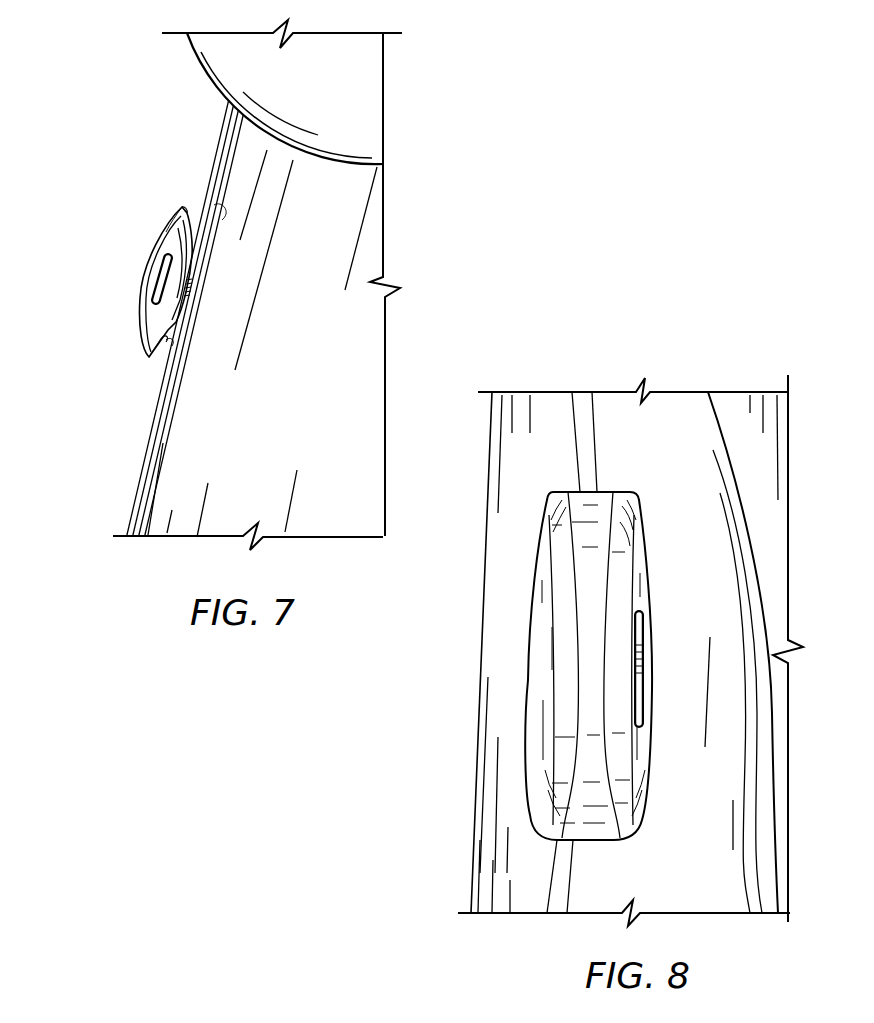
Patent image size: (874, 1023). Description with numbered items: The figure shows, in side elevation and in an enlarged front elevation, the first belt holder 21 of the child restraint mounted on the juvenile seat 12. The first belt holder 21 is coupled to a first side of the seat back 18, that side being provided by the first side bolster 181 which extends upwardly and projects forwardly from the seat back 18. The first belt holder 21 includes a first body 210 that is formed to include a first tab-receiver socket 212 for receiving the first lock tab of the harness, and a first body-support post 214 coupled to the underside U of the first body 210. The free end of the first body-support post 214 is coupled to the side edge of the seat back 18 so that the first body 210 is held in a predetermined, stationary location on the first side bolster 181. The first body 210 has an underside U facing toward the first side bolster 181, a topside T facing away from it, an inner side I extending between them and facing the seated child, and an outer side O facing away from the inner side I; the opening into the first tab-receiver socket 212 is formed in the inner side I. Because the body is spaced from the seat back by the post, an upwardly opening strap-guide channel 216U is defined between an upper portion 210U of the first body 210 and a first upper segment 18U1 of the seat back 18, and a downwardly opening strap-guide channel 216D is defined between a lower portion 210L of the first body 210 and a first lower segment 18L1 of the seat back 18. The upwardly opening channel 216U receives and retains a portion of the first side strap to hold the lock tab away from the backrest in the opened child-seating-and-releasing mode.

In FIG. 7, the juvenile seat 12 is at (399, 90).
In FIG. 8, the juvenile seat 12 is at (704, 416).
In FIG. 7, the seat back 18 is at (318, 336).
In FIG. 8, the seat back 18 is at (771, 462).
In FIG. 7, the first upper segment of seat back 18U1 is at (200, 213).
In FIG. 7, the first lower segment of seat back 18L1 is at (170, 343).
In FIG. 7, the first side bolster 181 is at (132, 444).
In FIG. 8, the first side bolster 181 is at (608, 416).
In FIG. 7, the first belt holder 21 is at (146, 238).
In FIG. 8, the first belt holder 21 is at (564, 666).
In FIG. 7, the first body 210 is at (146, 238).
In FIG. 8, the first body 210 is at (564, 666).
In FIG. 7, the upper portion of body 210U is at (182, 206).
In FIG. 8, the upper portion of body 210U is at (557, 527).
In FIG. 7, the lower portion of body 210L is at (153, 323).
In FIG. 8, the lower portion of body 210L is at (557, 807).
In FIG. 7, the first tab-receiver socket 212 is at (166, 254).
In FIG. 8, the first tab-receiver socket 212 is at (653, 630).
In FIG. 7, the first body-support post 214 is at (180, 303).
In FIG. 7, the upwardly opening strap-guide channel 216U is at (198, 192).
In FIG. 7, the downwardly opening strap-guide channel 216D is at (152, 374).
In FIG. 7, the topside T is at (177, 320).
In FIG. 8, the topside T is at (593, 540).
In FIG. 7, the underside U is at (168, 328).
In FIG. 7, the inner side I is at (145, 347).
In FIG. 8, the inner side I is at (643, 543).
In FIG. 8, the outer side O is at (537, 587).